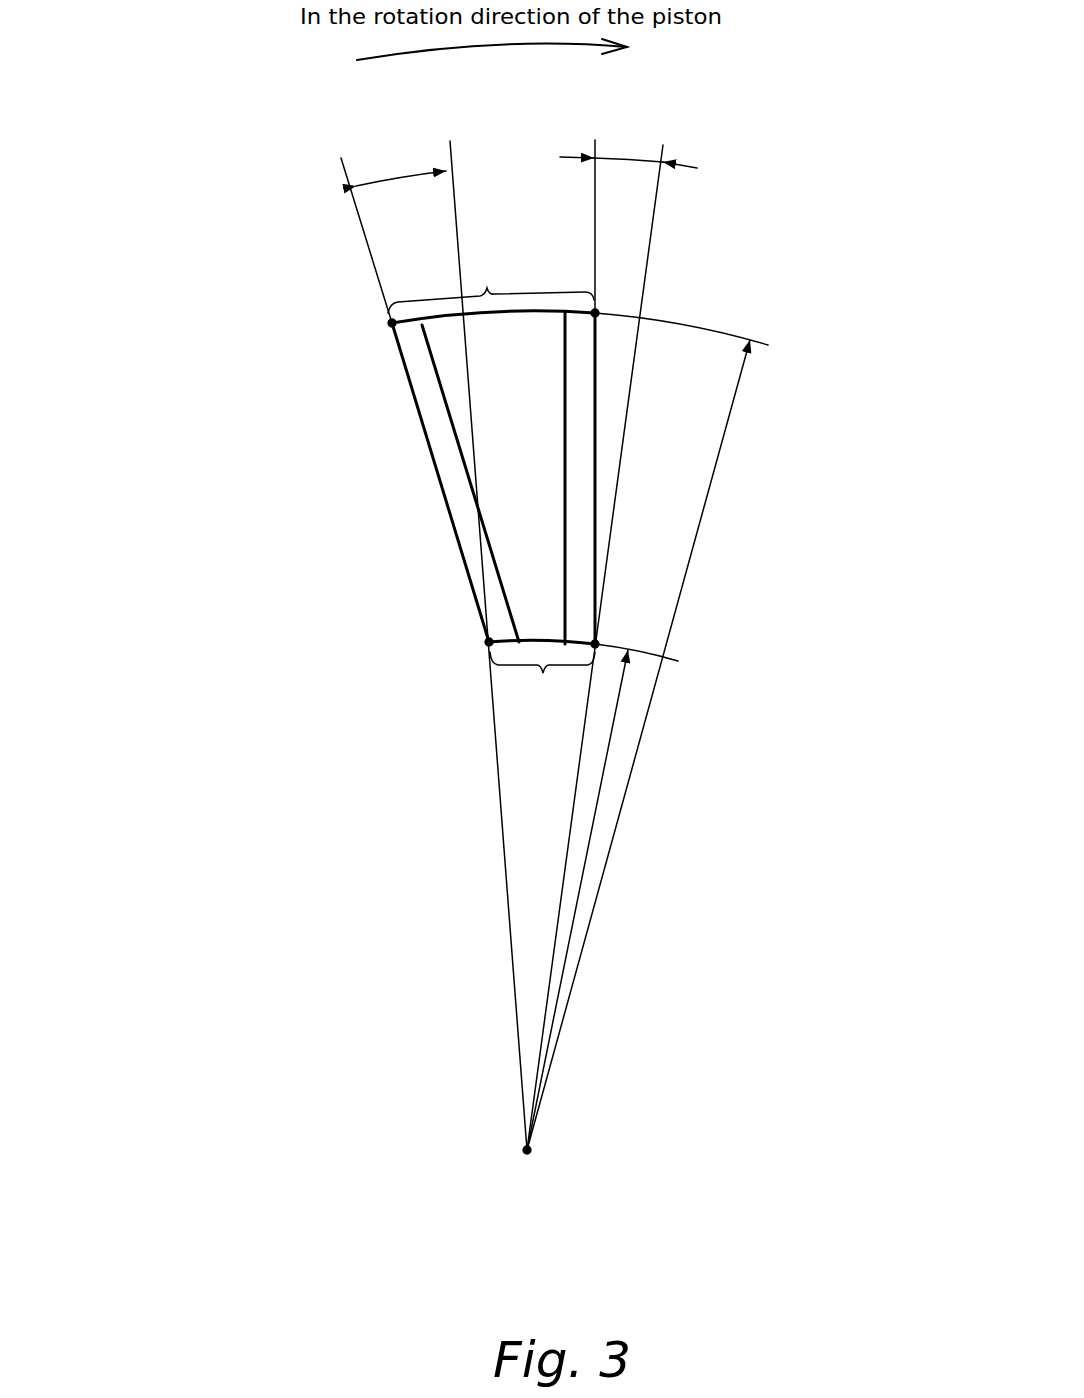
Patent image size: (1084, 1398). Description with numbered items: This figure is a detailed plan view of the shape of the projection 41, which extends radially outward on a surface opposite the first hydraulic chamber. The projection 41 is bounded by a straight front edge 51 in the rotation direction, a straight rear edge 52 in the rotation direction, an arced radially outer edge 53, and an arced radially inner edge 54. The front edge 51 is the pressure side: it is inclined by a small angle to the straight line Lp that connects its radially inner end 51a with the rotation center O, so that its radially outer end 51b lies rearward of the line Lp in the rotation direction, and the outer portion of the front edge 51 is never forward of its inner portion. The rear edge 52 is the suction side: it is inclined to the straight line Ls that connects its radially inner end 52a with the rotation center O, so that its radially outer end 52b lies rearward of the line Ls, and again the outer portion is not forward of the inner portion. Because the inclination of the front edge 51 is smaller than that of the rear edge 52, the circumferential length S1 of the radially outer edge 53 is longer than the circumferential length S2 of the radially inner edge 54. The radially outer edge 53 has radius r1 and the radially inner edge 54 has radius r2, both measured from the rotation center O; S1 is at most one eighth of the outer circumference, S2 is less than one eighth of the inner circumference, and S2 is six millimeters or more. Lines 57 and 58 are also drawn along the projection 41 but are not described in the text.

The projection 41 is at (403, 407).
The front edge in the rotation direction 51 is at (597, 428).
The radially inner end of the front edge 51a is at (597, 645).
The radially outer end of the front edge 51b is at (600, 318).
The rear edge in the rotation direction 52 is at (432, 476).
The radially inner end of the rear edge 52a is at (488, 644).
The radially outer end of the rear edge 52b is at (392, 325).
The radially outer edge 53 is at (522, 310).
The radially inner edge 54 is at (532, 647).
The piston seal line 57 is at (578, 522).
The vane seal line 58 is at (470, 518).
The rotation center O is at (527, 1150).
The straight line Ls is at (460, 212).
The straight line Lp is at (655, 218).
The radius of the radially outer edge r1 is at (654, 721).
The radius of the radially inner edge r2 is at (602, 880).
The circumferential length of the radially outer edge S1 is at (491, 280).
The circumferential length of the radially inner edge S2 is at (542, 684).